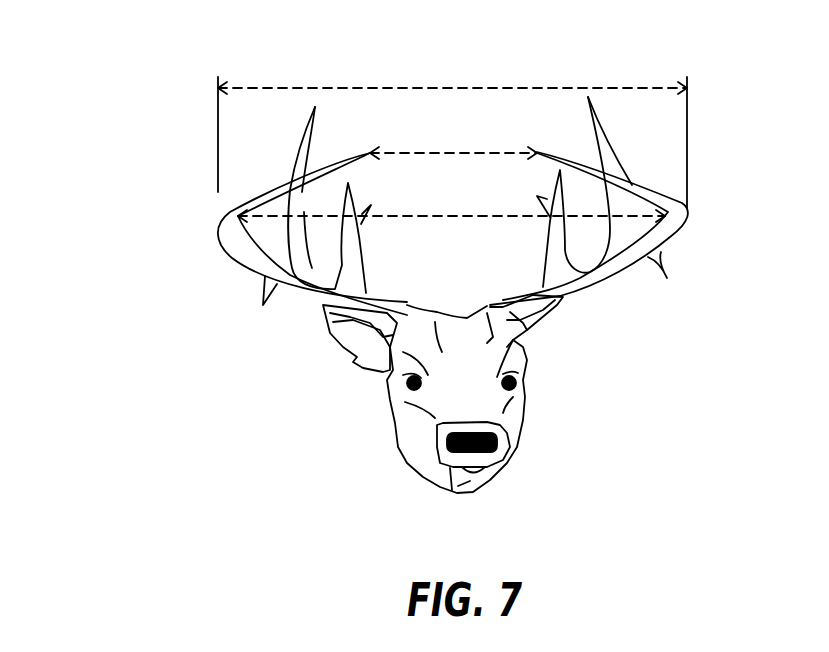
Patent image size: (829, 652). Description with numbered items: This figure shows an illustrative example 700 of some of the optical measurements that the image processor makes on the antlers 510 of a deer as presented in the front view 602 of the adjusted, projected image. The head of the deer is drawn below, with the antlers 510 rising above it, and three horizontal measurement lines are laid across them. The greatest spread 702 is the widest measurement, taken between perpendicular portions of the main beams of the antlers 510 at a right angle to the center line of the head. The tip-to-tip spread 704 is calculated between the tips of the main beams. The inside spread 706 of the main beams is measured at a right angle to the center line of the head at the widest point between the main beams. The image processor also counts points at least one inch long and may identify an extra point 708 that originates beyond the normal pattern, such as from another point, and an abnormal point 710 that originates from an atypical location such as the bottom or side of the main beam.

The illustrative example of optical measurements 700 is at (172, 62).
The antlers 510 is at (217, 228).
The front view 602 is at (238, 388).
The greatest spread 702 is at (425, 88).
The tip-to-tip spread 704 is at (452, 153).
The inside spread 706 is at (487, 215).
The extra point 708 is at (368, 228).
The abnormal point 710 is at (667, 278).